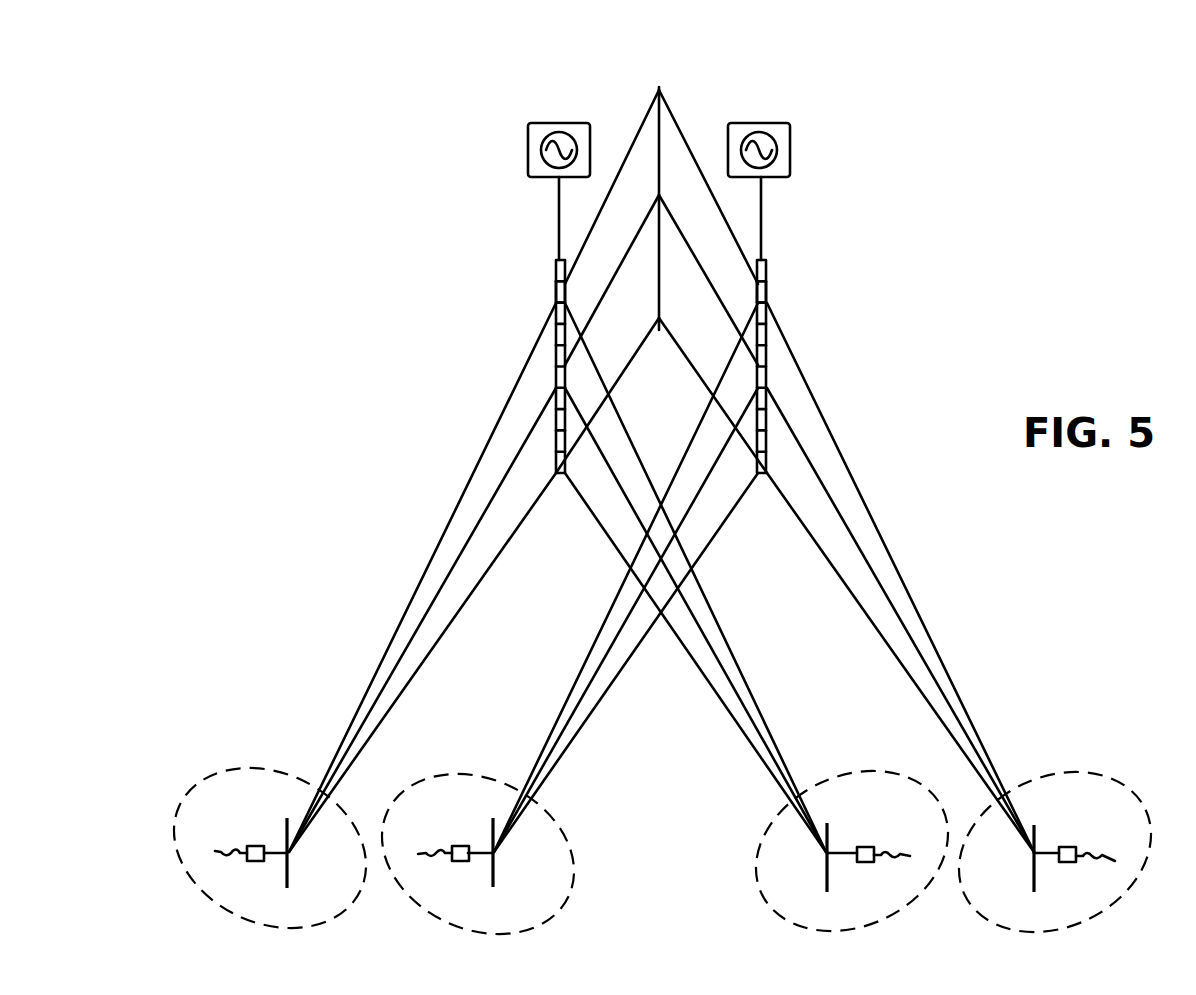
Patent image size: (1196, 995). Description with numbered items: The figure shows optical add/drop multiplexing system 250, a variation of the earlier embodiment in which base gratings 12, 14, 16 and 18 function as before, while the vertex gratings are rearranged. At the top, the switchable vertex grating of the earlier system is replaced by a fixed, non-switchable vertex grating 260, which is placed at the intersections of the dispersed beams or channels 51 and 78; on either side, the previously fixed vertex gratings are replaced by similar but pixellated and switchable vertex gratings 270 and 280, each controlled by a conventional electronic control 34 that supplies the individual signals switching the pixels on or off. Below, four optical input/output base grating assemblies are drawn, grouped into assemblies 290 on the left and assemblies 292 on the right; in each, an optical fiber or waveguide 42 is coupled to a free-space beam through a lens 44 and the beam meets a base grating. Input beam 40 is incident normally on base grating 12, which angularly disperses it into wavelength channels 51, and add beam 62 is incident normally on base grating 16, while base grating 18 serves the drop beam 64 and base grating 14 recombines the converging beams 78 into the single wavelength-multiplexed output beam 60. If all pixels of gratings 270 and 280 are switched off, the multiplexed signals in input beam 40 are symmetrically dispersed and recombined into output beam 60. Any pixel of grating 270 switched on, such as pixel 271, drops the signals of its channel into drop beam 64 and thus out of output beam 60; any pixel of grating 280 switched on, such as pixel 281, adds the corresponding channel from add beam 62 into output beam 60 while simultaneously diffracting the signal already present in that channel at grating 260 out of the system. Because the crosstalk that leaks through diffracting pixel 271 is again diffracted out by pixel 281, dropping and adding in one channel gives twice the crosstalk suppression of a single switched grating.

The optical add/drop multiplexing system 250 is at (341, 94).
The fixed vertex grating 260 is at (657, 83).
The electronic control 34 is at (528, 150).
The switchable vertex grating 270 is at (556, 262).
The pixel 271 is at (555, 294).
The switchable vertex grating 280 is at (766, 262).
The pixel 281 is at (768, 292).
The optical carrier beams 78 is at (900, 577).
The wavelength channels or beams 51 is at (425, 577).
The optical input/output base grating assemblies 290 is at (238, 763).
The optical input/output base grating assemblies 292 is at (878, 772).
The lens 44 is at (255, 846).
The optical fiber or waveguide 42 is at (667, 835).
The input beam 40 is at (272, 860).
The add beam 62 is at (480, 857).
The drop beam 64 is at (843, 858).
The output beam 60 is at (1047, 858).
The base diffraction grating 12 is at (291, 868).
The base grating 16 is at (500, 870).
The base grating 18 is at (825, 872).
The base grating 14 is at (1030, 870).